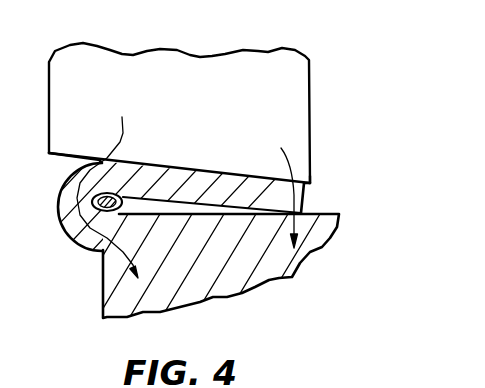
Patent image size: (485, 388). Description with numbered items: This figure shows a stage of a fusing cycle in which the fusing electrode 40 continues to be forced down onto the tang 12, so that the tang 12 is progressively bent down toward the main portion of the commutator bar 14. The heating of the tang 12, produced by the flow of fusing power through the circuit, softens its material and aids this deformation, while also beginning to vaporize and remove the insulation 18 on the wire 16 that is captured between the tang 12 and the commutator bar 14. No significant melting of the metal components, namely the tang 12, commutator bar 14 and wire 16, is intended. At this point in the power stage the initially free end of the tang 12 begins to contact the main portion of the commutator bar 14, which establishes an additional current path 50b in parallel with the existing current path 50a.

The tang 12 is at (305, 201).
The commutator bar 14 is at (310, 250).
The wire 16 is at (64, 234).
The insulation 18 is at (93, 197).
The fusing electrode 40 is at (302, 85).
The current path 50a is at (99, 161).
The additional current path 50b is at (306, 179).